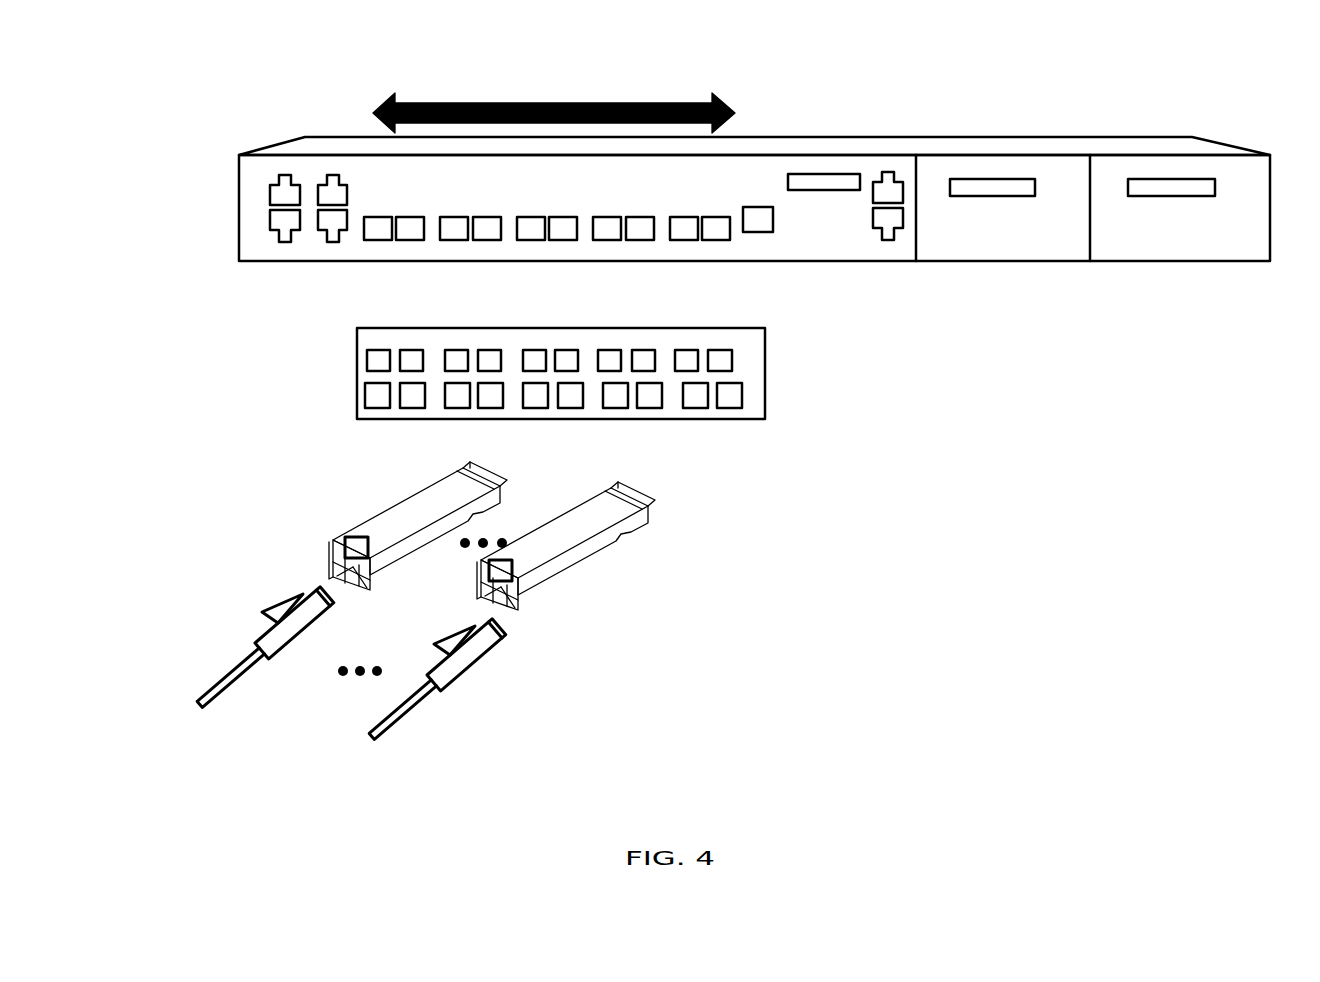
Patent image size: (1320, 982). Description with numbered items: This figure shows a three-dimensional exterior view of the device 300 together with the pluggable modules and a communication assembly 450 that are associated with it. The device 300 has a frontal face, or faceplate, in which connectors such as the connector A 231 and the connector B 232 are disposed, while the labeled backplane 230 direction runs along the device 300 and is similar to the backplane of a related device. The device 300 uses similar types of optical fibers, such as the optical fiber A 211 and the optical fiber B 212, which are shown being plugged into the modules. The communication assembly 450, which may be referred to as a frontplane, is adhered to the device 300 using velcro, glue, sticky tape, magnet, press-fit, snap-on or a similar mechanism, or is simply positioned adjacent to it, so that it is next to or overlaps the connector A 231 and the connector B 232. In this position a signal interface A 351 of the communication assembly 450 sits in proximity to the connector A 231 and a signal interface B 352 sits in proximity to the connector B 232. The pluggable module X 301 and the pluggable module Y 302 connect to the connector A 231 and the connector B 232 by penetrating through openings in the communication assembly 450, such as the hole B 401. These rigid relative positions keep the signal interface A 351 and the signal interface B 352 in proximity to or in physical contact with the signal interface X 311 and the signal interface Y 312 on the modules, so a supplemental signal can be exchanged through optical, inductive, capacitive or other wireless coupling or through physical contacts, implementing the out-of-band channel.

The backplane 230 is at (554, 84).
The device 300 is at (754, 148).
The connector A 231 is at (628, 205).
The connector B 232 is at (805, 252).
The communication assembly 450 is at (447, 366).
The signal interface A 351 is at (693, 336).
The signal interface B 352 is at (876, 391).
The hole B 401 is at (749, 432).
The pluggable module X 301 is at (368, 647).
The pluggable module Y 302 is at (631, 615).
The signal interface X 311 is at (306, 684).
The signal interface Y 312 is at (595, 654).
The optical fiber A 211 is at (238, 622).
The optical fiber B 212 is at (478, 705).